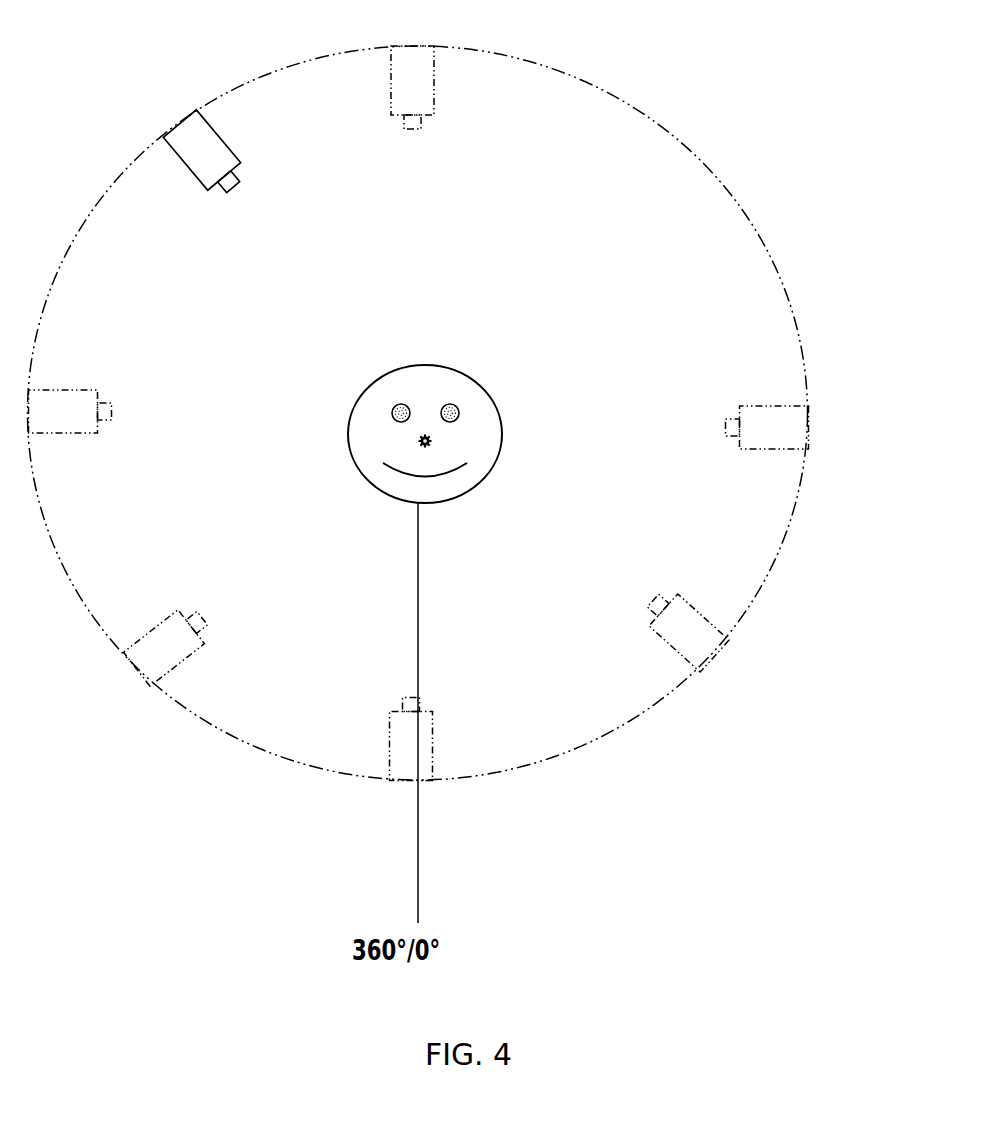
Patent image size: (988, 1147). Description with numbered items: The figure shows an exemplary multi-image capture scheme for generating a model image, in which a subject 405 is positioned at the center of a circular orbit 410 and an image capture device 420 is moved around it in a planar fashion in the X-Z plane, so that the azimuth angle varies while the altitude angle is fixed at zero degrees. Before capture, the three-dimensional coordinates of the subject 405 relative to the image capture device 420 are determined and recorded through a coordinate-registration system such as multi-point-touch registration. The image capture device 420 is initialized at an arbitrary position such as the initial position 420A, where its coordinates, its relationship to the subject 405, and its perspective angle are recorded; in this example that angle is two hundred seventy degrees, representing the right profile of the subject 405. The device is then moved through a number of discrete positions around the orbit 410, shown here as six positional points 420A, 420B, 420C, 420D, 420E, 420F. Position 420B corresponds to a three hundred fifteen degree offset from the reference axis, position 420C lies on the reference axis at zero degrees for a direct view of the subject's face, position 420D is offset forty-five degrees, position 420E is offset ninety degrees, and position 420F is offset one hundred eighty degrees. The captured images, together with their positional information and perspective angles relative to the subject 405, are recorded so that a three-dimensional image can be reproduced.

The circular orbit 410 is at (767, 256).
The subject 405 is at (418, 365).
The image capture device 420 is at (183, 118).
The initial position 420A is at (42, 391).
The position 420B is at (138, 628).
The position 420C is at (433, 723).
The position 420D is at (727, 637).
The position 420E is at (795, 407).
The position 420F is at (418, 60).